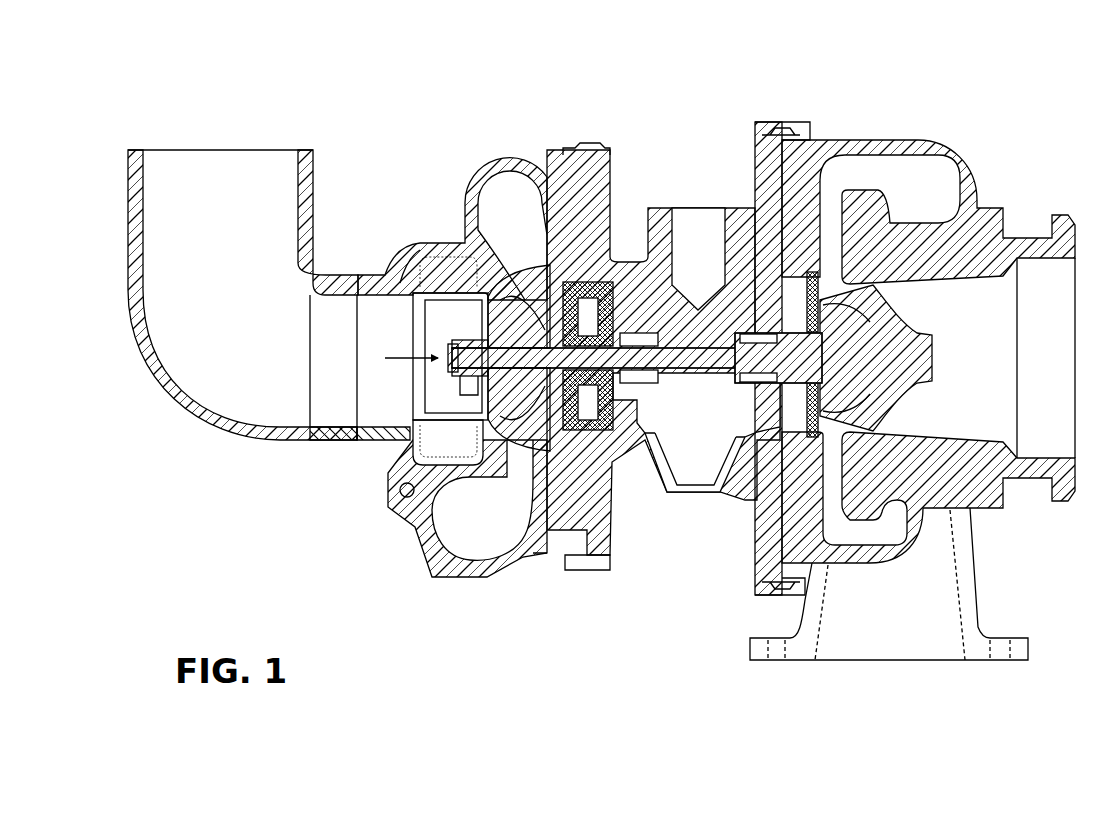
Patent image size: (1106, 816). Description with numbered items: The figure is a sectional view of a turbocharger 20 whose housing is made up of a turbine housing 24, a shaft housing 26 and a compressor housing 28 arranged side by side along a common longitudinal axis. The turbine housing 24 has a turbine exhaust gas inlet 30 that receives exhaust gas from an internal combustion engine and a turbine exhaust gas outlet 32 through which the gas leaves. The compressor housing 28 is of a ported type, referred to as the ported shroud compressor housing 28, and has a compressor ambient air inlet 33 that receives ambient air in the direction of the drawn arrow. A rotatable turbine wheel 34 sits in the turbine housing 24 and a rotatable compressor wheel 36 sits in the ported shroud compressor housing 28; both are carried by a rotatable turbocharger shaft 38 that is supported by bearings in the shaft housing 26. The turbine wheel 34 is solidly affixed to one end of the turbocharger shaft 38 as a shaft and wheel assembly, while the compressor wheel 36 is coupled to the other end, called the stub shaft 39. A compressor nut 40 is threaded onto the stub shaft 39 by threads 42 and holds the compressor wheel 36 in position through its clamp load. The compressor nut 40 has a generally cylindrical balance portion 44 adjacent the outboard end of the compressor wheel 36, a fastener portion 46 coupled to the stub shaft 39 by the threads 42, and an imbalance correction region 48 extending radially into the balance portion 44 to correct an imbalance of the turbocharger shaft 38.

The turbocharger 20 is at (953, 116).
The turbine housing 24 is at (968, 170).
The shaft housing 26 is at (612, 242).
The ported shroud compressor housing 28 is at (476, 188).
The turbine exhaust gas inlet 30 is at (950, 598).
The turbine exhaust gas outlet 32 is at (1048, 262).
The compressor ambient air inlet 33 is at (310, 355).
The turbine wheel 34 is at (905, 392).
The compressor wheel 36 is at (505, 432).
The turbocharger shaft 38 is at (698, 380).
The stub shaft 39 is at (537, 362).
The compressor nut 40 is at (463, 333).
The threads 42 is at (470, 330).
The balance portion 44 is at (453, 347).
The fastener portion 46 is at (478, 396).
The imbalance correction region 48 is at (455, 377).